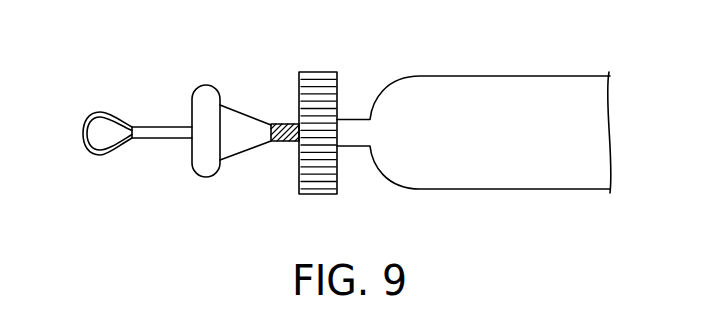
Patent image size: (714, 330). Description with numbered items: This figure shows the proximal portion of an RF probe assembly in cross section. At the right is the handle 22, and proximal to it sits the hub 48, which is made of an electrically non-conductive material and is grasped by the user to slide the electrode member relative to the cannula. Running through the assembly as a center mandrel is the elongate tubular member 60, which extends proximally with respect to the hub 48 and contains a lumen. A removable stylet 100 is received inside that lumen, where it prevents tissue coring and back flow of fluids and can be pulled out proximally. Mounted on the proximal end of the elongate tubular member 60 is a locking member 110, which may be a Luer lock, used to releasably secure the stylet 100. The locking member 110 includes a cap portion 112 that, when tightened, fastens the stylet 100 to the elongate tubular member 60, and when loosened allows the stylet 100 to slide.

The handle 22 is at (494, 75).
The hub 48 is at (318, 71).
The elongate tubular member 60 is at (280, 143).
The stylet 100 is at (161, 126).
The locking member 110 is at (235, 105).
The cap portion 112 is at (206, 177).